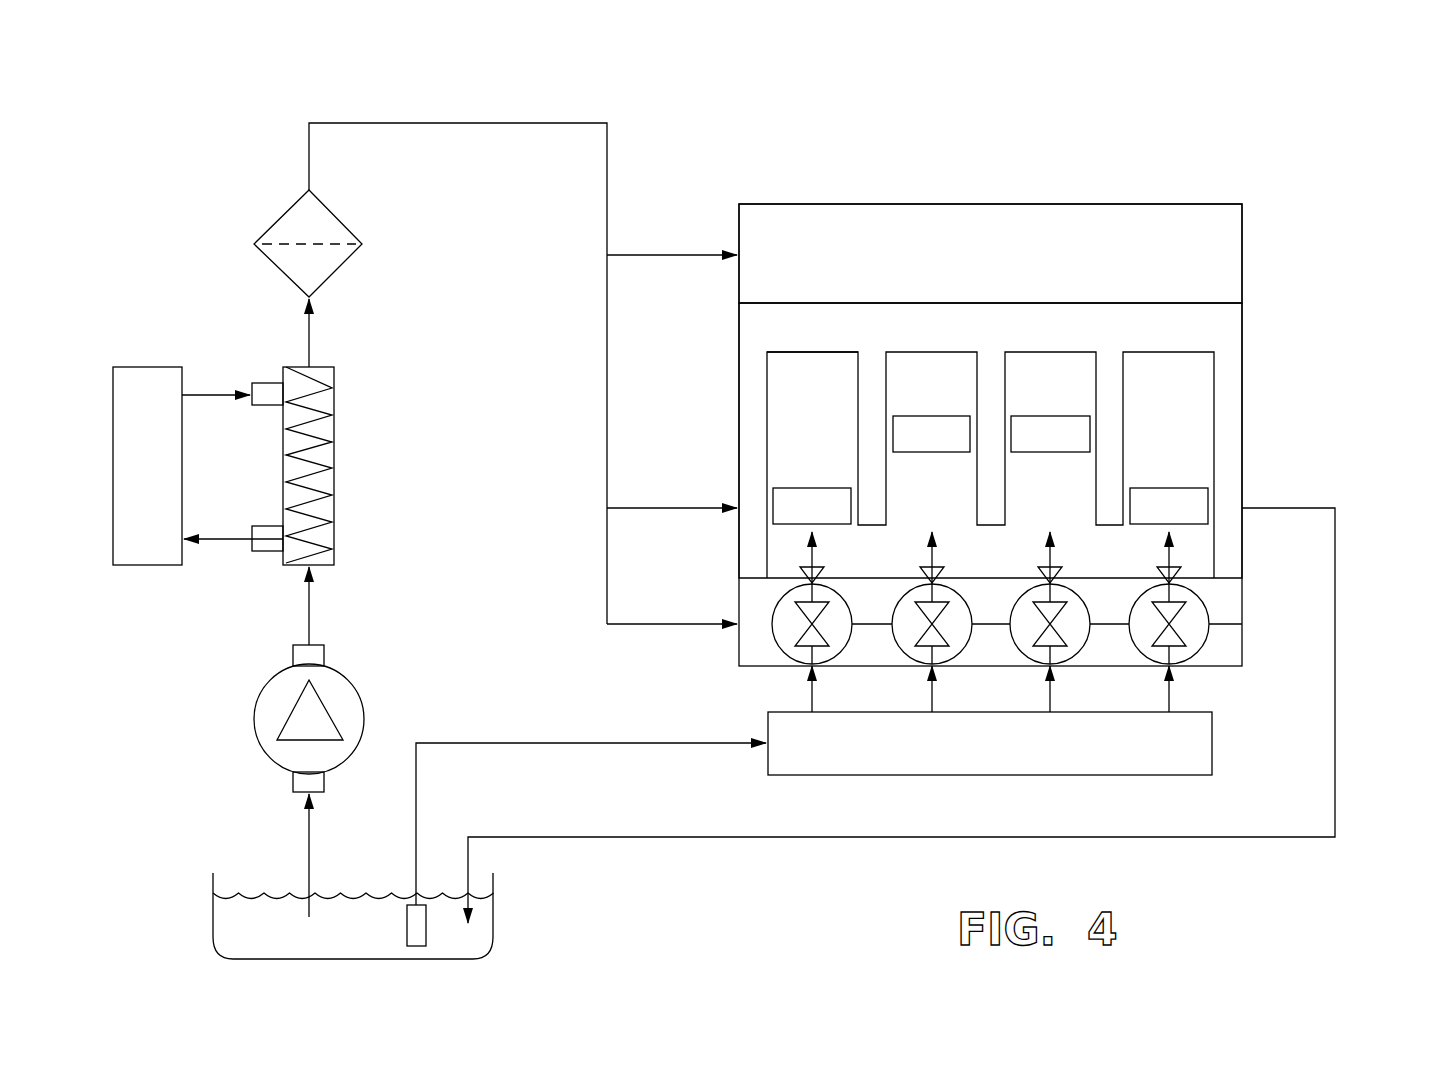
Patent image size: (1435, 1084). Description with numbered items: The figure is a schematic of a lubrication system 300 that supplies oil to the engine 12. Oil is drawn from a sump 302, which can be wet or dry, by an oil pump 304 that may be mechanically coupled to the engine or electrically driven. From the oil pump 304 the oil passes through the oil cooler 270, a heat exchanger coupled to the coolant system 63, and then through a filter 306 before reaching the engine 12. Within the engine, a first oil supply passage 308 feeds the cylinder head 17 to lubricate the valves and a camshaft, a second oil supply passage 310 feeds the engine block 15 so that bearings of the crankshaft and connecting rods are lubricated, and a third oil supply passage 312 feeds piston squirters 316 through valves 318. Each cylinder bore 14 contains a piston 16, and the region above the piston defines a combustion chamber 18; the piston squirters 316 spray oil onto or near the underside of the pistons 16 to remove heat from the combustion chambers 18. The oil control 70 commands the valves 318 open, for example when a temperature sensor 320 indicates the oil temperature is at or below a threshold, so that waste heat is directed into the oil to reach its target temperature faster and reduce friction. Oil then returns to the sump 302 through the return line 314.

The lubrication system 300 is at (622, 96).
The filter 306 is at (286, 210).
The oil cooler 270 is at (334, 385).
The coolant system 63 is at (162, 481).
The oil pump 304 is at (272, 686).
The sump 302 is at (493, 922).
The temperature sensor 320 is at (407, 918).
The engine 12 is at (1318, 280).
The cylinder head 17 is at (1242, 237).
The engine block 15 is at (1242, 367).
The cylinder bore 14 is at (770, 370).
The combustion chamber 18 is at (826, 409).
The piston 16 is at (775, 512).
The piston squirters 316 is at (800, 575).
The valves 318 is at (805, 640).
The first oil supply passage 308 is at (683, 253).
The second oil supply passage 310 is at (683, 506).
The third oil supply passage 312 is at (637, 626).
The oil return line 314 is at (730, 838).
The oil control 70 is at (1212, 731).